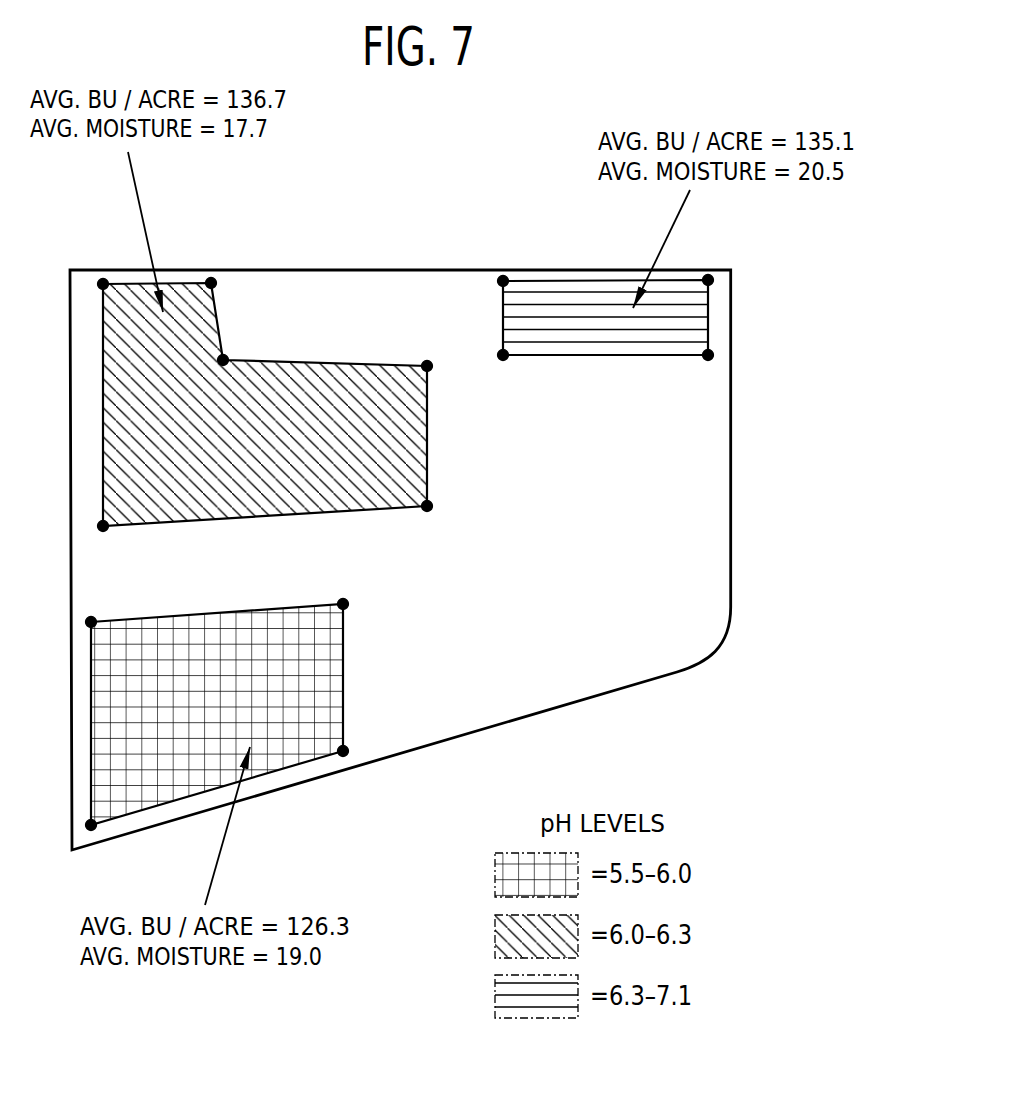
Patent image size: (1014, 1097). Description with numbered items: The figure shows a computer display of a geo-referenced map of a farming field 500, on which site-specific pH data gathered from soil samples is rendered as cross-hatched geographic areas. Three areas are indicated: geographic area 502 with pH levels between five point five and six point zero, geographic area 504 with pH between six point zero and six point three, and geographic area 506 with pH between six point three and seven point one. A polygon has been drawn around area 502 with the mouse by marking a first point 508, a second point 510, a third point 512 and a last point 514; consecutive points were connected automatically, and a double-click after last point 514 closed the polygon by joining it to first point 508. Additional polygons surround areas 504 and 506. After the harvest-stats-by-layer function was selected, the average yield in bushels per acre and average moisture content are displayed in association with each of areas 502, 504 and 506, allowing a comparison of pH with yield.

The farming field 500 is at (290, 253).
The geographic area 502 is at (345, 650).
The geographic area 504 is at (293, 362).
The geographic area 506 is at (593, 280).
The first point 508 is at (343, 604).
The second point 510 is at (92, 620).
The third point 512 is at (91, 825).
The last point 514 is at (343, 751).